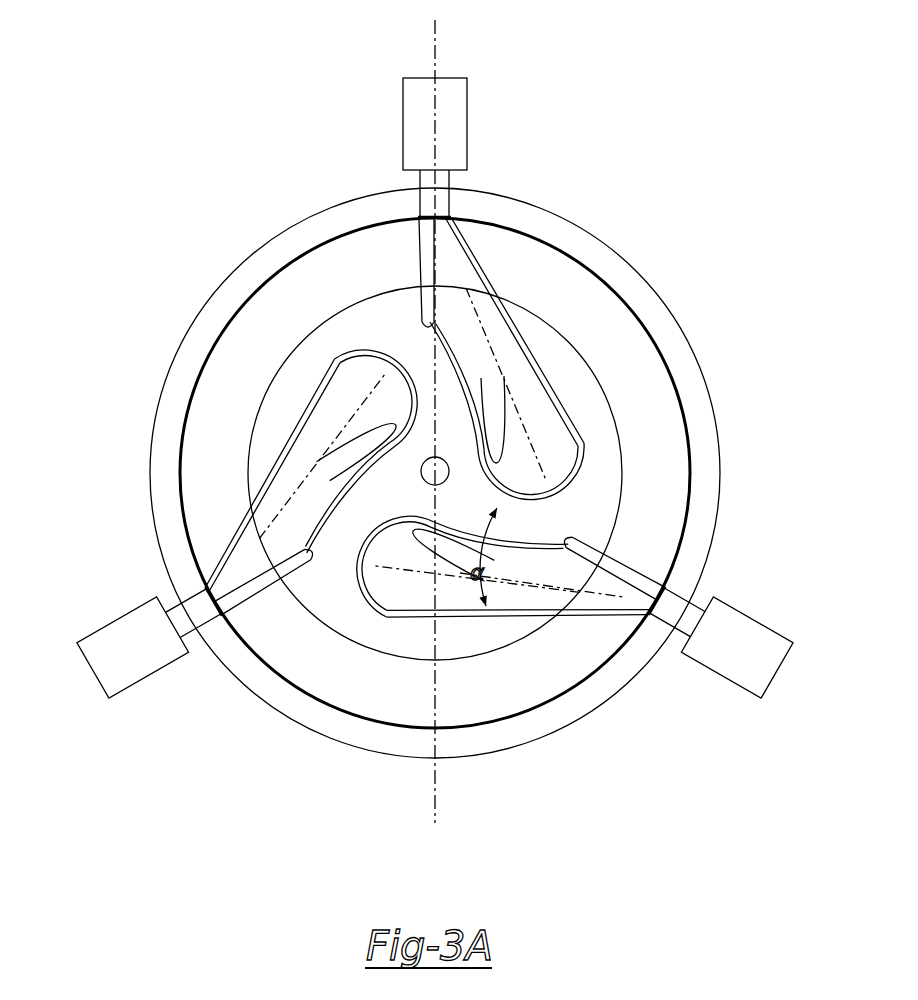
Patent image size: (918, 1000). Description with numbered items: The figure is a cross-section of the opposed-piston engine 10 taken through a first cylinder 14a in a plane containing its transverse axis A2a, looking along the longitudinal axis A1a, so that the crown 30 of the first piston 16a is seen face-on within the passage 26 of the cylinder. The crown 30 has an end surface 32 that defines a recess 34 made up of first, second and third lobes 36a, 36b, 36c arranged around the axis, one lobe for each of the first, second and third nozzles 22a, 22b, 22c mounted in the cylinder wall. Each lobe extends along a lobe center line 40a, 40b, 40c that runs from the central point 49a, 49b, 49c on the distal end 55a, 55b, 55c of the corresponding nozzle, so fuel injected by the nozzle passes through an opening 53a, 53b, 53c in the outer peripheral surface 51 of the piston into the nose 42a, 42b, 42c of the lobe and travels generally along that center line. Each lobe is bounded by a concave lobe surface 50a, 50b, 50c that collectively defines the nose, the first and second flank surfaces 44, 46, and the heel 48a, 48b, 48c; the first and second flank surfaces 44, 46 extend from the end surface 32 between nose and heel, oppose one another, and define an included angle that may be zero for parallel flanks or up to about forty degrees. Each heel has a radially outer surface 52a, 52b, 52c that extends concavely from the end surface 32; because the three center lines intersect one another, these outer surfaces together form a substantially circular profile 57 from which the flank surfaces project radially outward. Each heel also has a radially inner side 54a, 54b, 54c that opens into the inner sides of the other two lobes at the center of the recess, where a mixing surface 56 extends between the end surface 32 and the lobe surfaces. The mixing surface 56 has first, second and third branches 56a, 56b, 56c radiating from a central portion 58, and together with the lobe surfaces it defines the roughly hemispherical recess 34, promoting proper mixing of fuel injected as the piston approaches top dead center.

The engine 10 is at (602, 187).
The first cylinder 14a is at (197, 307).
The first piston 16a is at (232, 316).
The first nozzle 22a is at (403, 85).
The second nozzle 22b is at (797, 635).
The third nozzle 22c is at (73, 633).
The passage 26 is at (265, 316).
The crown 30 is at (298, 278).
The end surface 32 is at (298, 316).
The recess 34 is at (594, 378).
The first lobe 36a is at (528, 348).
The second lobe 36b is at (418, 619).
The third lobe 36c is at (323, 390).
The lobe center line of the first lobe 40a is at (600, 505).
The lobe center line of the second lobe 40b is at (517, 587).
The lobe center line of the third lobe 40c is at (262, 533).
The nose of the first lobe 42a is at (453, 214).
The nose of the second lobe 42b is at (668, 590).
The nose of the third lobe 42c is at (222, 648).
The first flank surface 44 is at (246, 500).
The second flank surface 46 is at (280, 590).
The heel of the first lobe 48a is at (580, 456).
The heel of the second lobe 48b is at (370, 584).
The heel of the third lobe 48c is at (350, 358).
The central point of the first nozzle 49a is at (414, 217).
The central point of the second nozzle 49b is at (643, 597).
The central point of the third nozzle 49c is at (240, 566).
The lobe surface of the first lobe 50a is at (566, 451).
The lobe surface of the second lobe 50b is at (427, 565).
The lobe surface of the third lobe 50c is at (374, 441).
The outer peripheral surface 51 is at (180, 400).
The radially outer surface of the first lobe heel 52a is at (579, 452).
The radially outer surface of the second lobe heel 52b is at (400, 622).
The radially outer surface of the third lobe heel 52c is at (337, 370).
The first opening 53a is at (428, 217).
The second opening 53b is at (663, 612).
The third opening 53c is at (207, 590).
The radially inner side of the first lobe heel 54a is at (490, 410).
The radially inner side of the second lobe heel 54b is at (422, 522).
The radially inner side of the third lobe heel 54c is at (398, 460).
The distal end of the first nozzle 55a is at (453, 240).
The distal end of the second nozzle 55b is at (630, 615).
The distal end of the third nozzle 55c is at (214, 572).
The mixing surface 56 is at (424, 446).
The first branch 56a is at (426, 369).
The second branch 56b is at (554, 514).
The third branch 56c is at (352, 535).
The circular profile 57 is at (262, 652).
The central portion of the mixing surface 58 is at (439, 484).
The longitudinal axis of the first cylinder A1a is at (459, 405).
The transverse axis of the first cylinder A2a is at (435, 58).